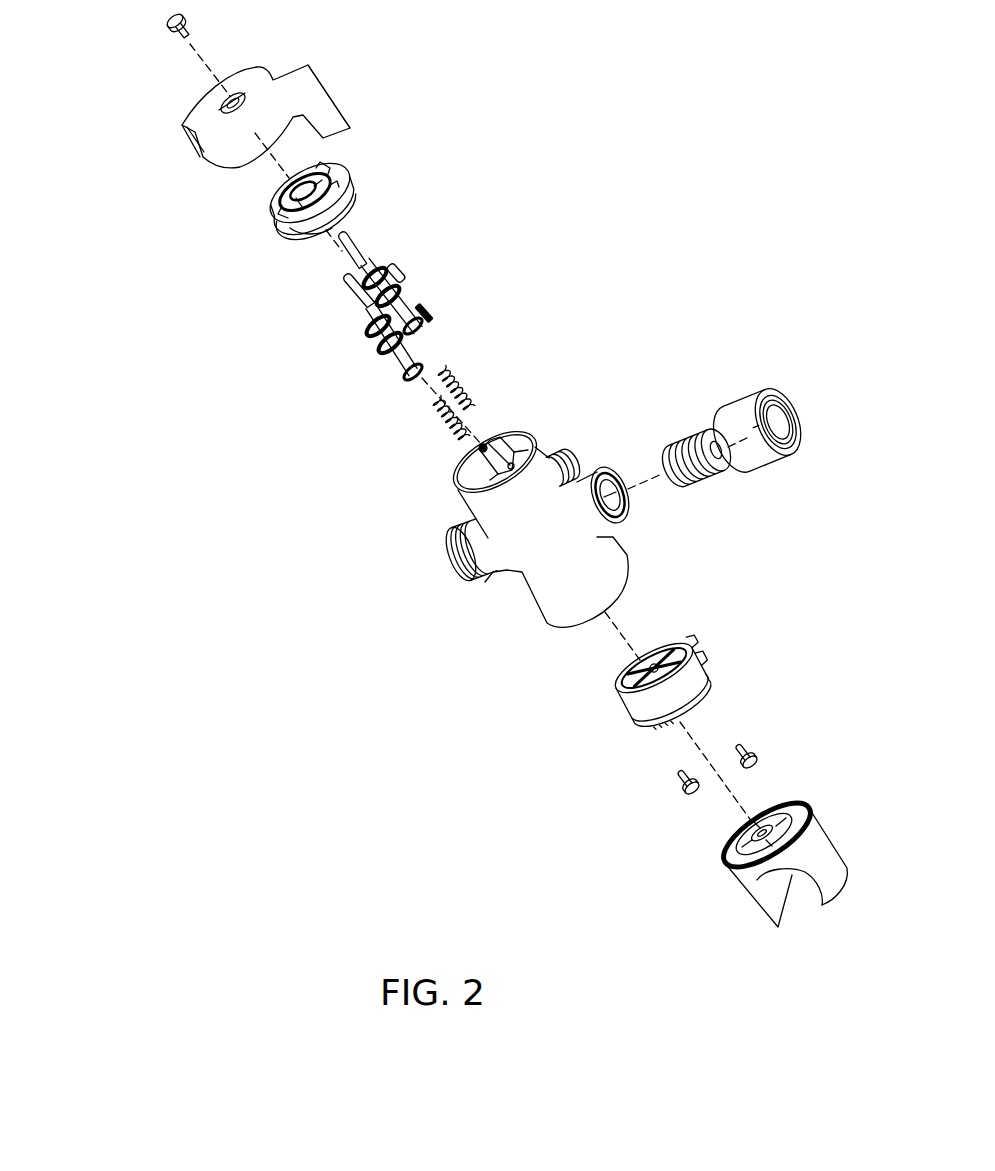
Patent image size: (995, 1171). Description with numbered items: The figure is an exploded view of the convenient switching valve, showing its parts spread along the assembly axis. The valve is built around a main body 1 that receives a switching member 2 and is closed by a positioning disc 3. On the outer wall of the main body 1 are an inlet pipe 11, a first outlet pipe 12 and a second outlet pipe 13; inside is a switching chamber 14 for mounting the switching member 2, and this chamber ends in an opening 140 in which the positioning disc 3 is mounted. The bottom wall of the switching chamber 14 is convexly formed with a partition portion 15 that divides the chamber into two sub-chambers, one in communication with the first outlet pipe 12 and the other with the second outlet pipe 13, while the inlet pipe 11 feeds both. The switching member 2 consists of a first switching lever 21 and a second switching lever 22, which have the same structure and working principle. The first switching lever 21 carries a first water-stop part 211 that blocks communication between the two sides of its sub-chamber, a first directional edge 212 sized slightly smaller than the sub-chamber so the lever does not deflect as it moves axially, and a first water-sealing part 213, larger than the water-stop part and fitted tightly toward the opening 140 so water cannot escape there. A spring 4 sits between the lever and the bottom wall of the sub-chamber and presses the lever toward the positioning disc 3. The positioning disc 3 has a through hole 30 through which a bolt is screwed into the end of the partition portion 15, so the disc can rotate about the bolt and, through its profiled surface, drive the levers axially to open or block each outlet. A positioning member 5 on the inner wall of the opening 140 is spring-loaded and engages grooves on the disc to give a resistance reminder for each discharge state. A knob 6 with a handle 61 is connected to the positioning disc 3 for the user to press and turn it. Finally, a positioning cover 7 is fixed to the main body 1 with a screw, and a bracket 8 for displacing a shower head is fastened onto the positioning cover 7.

The main body 1 is at (516, 505).
The switching member 2 is at (112, 395).
The positioning disc 3 is at (330, 183).
The spring 4 is at (458, 390).
The positioning member 5 is at (397, 263).
The knob 6 is at (200, 100).
The positioning cover 7 is at (640, 708).
The bracket 8 is at (778, 897).
The inlet pipe 11 is at (630, 512).
The first outlet pipe 12 is at (448, 558).
The second outlet pipe 13 is at (567, 452).
The switching chamber 14 is at (455, 489).
The partition portion 15 is at (458, 468).
The first switching lever 21 is at (177, 460).
The second switching lever 22 is at (345, 258).
The through hole 30 is at (268, 190).
The handle 61 is at (330, 118).
The opening 140 is at (523, 427).
The first water-stop part 211 is at (404, 352).
The first directional edge 212 is at (412, 368).
The first water-sealing part 213 is at (358, 316).